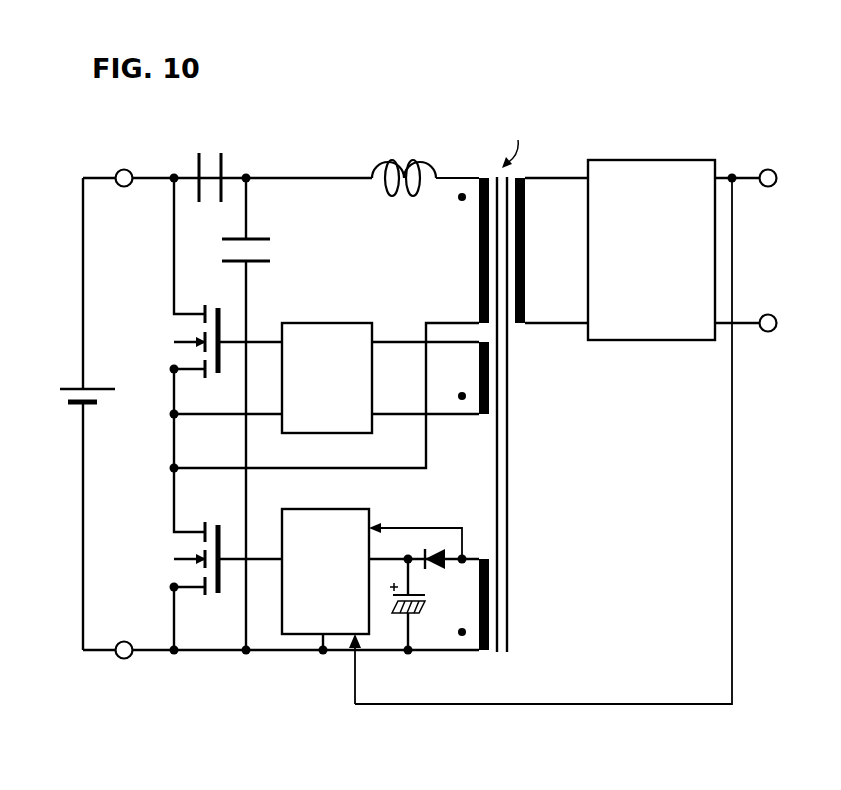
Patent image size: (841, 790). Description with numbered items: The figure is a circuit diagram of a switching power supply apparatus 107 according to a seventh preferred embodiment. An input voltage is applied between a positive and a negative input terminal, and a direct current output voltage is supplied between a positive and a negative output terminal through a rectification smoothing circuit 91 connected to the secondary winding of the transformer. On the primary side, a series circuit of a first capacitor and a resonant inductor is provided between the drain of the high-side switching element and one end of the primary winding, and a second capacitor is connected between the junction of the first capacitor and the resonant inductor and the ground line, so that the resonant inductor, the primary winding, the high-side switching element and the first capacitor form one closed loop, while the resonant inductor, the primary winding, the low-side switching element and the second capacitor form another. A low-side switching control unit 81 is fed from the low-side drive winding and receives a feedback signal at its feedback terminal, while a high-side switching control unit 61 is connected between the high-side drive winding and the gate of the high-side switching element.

The high-side switching control unit 61 is at (322, 323).
The low-side switching control unit 81 is at (280, 634).
The rectification smoothing circuit 91 is at (650, 160).
The switching power supply apparatus 107 is at (802, 76).